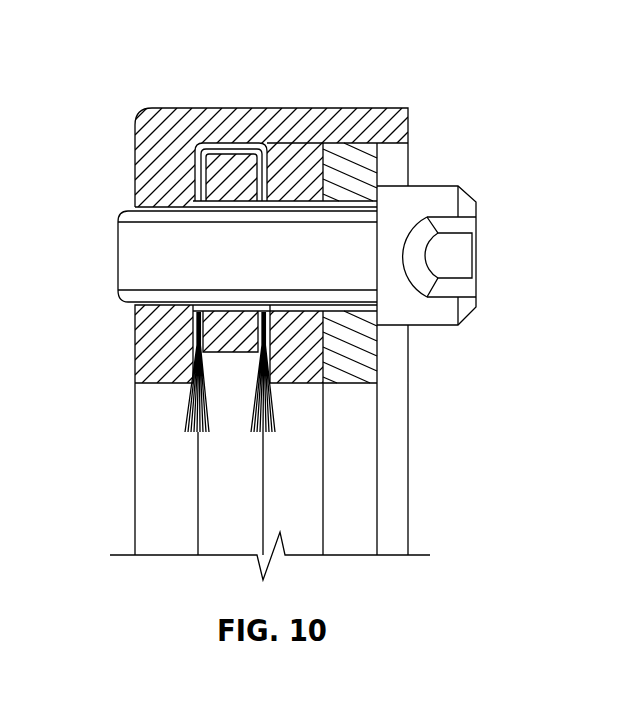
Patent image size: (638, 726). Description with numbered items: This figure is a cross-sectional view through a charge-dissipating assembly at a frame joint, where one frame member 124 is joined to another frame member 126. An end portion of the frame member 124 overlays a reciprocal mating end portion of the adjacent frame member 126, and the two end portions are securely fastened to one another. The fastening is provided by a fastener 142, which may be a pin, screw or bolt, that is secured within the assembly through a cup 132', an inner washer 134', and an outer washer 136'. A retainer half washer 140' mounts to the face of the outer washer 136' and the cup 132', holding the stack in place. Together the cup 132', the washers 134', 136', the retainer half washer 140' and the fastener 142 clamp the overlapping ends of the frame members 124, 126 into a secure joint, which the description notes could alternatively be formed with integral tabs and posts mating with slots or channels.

The frame member 124 is at (135, 140).
The frame member 126 is at (218, 358).
The cup 132' is at (221, 381).
The inner washer 134' is at (226, 133).
The outer washer 136' is at (256, 433).
The retainer half washer 140' is at (408, 348).
The fastener 142 is at (476, 258).